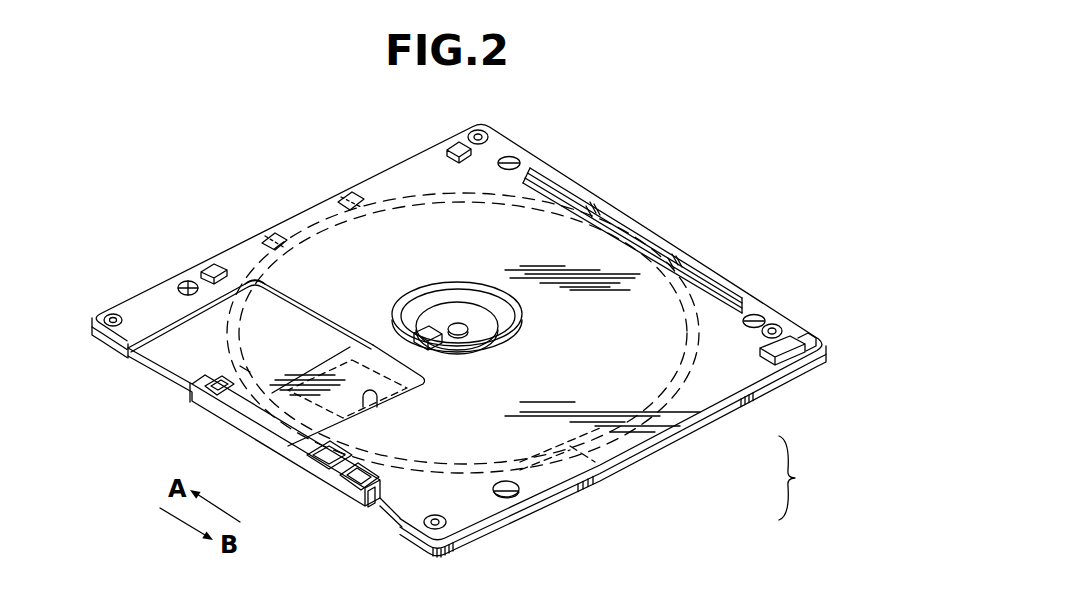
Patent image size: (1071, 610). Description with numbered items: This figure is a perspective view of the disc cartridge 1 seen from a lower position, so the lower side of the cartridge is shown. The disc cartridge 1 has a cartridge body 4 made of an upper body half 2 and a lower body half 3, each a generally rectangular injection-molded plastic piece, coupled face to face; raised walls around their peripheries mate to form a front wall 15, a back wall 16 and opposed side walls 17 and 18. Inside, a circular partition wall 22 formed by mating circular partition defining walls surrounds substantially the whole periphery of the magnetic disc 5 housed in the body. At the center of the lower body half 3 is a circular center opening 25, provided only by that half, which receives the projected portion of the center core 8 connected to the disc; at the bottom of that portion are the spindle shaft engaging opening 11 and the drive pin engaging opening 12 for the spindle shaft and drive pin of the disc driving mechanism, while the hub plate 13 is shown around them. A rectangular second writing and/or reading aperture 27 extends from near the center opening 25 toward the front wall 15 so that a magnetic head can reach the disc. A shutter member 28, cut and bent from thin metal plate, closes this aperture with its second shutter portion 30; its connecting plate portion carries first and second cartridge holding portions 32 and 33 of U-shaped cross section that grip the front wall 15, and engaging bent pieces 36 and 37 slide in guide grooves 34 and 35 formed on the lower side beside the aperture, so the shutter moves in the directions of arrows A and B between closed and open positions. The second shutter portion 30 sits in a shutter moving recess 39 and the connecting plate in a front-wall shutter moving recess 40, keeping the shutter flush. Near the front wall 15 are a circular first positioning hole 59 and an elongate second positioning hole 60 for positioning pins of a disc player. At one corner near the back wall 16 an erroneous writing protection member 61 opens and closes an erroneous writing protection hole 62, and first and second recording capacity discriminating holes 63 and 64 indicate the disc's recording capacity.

The disc cartridge 1 is at (612, 152).
The upper body half 2 is at (700, 427).
The lower body half 3 is at (713, 407).
The cartridge body 4 is at (812, 494).
The magnetic disc 5 is at (652, 288).
The center core 8 is at (407, 308).
The spindle shaft engaging opening 11 is at (466, 324).
The drive pin engaging opening 12 is at (440, 340).
The hub plate 13 is at (440, 300).
The front wall 15 is at (392, 510).
The back wall 16 is at (636, 222).
The side wall 17 is at (655, 450).
The side wall 18 is at (275, 227).
The partition wall 22 is at (398, 197).
The center opening 25 is at (522, 318).
The second writing and/or reading aperture 27 is at (395, 407).
The shutter member 28 is at (270, 424).
The second shutter portion 30 is at (350, 362).
The first cartridge holding portion 32 is at (188, 395).
The second cartridge holding portion 33 is at (367, 503).
The guide groove 34 is at (248, 372).
The guide groove 35 is at (320, 460).
The engaging bent piece 36 is at (212, 380).
The engaging bent piece 37 is at (352, 478).
The shutter moving recess 39 is at (268, 288).
The shutter moving recess 40 is at (132, 358).
The first positioning hole 59 is at (186, 282).
The second positioning hole 60 is at (515, 495).
The erroneous writing protection member 61 is at (795, 362).
The erroneous writing protection hole 62 is at (815, 352).
The first recording capacity discriminating hole 63 is at (208, 262).
The second recording capacity discriminating hole 64 is at (447, 147).